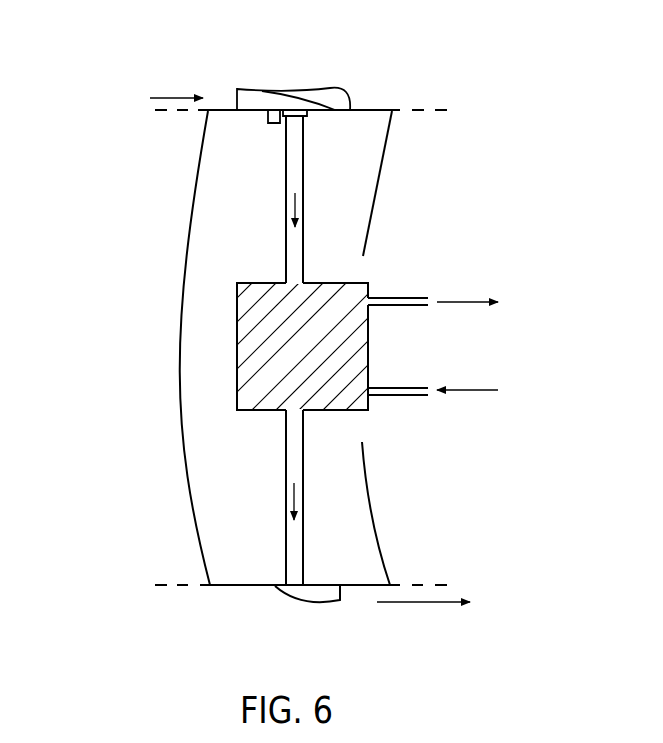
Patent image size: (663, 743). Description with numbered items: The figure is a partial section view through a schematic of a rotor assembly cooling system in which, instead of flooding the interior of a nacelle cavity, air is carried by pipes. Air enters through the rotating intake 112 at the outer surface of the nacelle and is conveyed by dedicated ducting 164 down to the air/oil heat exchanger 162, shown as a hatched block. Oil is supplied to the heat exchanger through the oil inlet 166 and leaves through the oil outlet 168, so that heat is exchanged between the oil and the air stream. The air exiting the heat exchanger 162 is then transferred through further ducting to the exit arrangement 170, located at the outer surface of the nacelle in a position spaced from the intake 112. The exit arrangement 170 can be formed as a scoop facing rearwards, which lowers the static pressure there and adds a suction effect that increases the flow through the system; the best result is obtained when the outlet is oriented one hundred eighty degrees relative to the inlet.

The rotating intake 112 is at (345, 98).
The air/oil heat exchanger 162 is at (257, 341).
The dedicated ducting 164 is at (292, 163).
The oil inlet 166 is at (400, 397).
The oil outlet 168 is at (407, 296).
The exit arrangement 170 is at (322, 603).